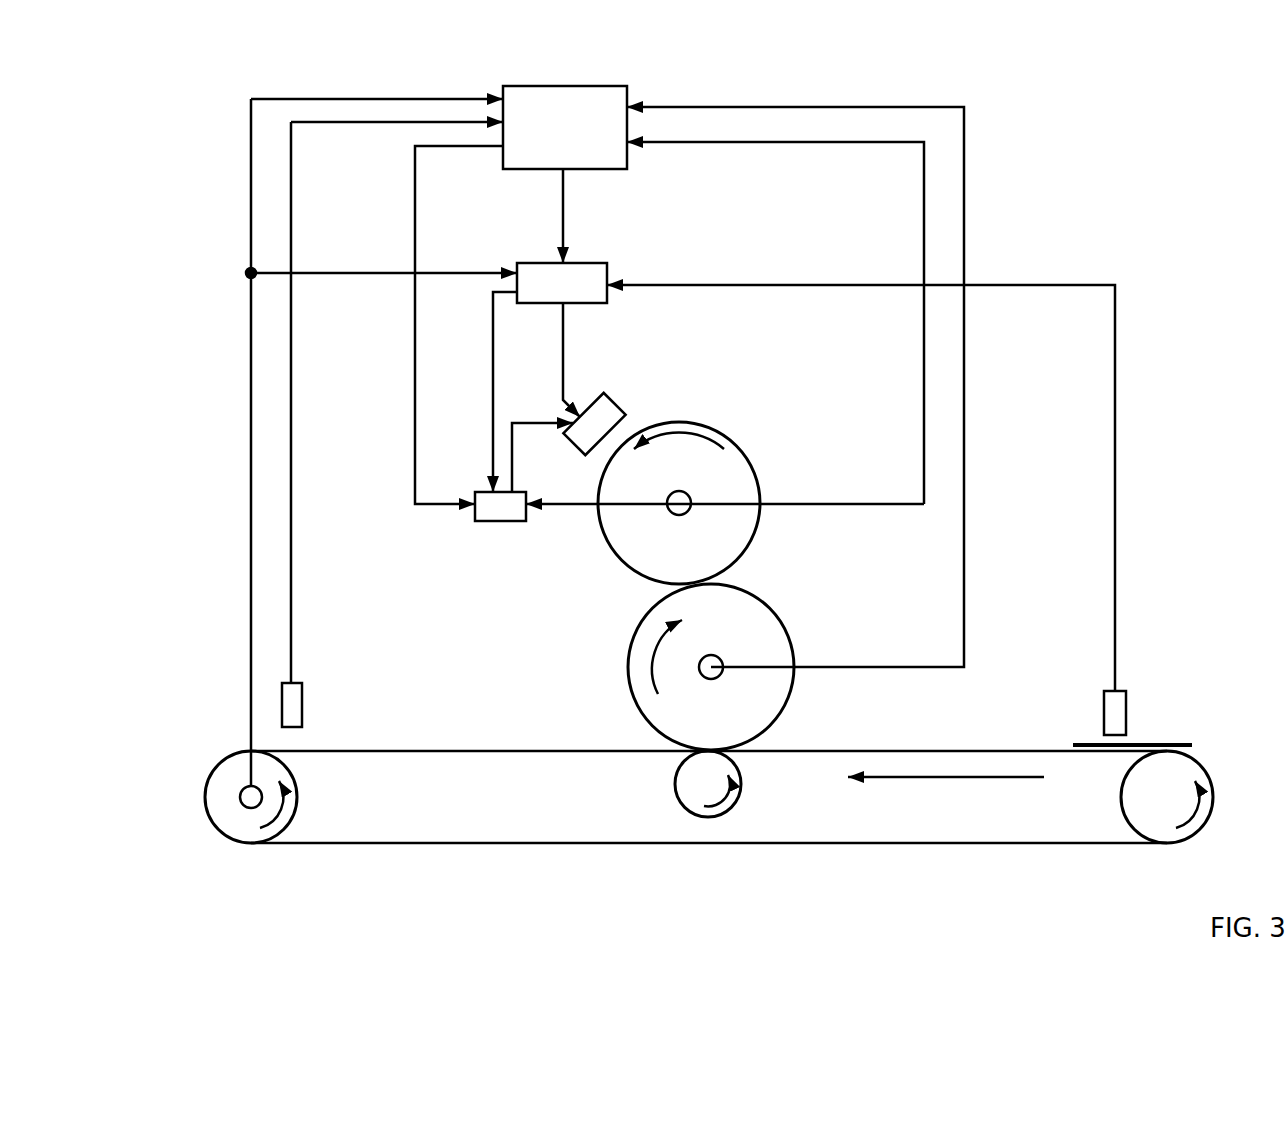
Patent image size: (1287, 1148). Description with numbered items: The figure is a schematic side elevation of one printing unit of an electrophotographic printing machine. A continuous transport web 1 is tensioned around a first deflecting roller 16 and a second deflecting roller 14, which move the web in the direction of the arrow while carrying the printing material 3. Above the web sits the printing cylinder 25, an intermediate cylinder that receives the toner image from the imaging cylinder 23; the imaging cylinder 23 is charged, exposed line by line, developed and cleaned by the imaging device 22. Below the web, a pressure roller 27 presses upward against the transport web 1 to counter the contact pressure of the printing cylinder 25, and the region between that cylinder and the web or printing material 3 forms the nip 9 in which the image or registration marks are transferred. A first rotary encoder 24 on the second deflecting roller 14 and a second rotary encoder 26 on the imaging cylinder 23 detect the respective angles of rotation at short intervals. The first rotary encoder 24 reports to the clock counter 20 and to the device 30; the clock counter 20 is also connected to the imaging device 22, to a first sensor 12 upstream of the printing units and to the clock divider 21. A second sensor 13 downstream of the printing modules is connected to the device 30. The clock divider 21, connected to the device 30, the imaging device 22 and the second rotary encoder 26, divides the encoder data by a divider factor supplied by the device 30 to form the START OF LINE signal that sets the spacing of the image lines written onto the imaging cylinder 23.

The transport web 1 is at (945, 751).
The printing material 3 is at (1180, 745).
The nip 9 is at (703, 753).
The first sensor 12 is at (1126, 710).
The second sensor 13 is at (302, 708).
The second deflecting roller 14 is at (222, 772).
The first deflecting roller 16 is at (1210, 770).
The clock counter 20 is at (608, 263).
The clock divider 21 is at (490, 508).
The imaging device 22 is at (606, 391).
The imaging cylinder 23 is at (738, 442).
The first rotary encoder 24 is at (247, 808).
The printing cylinder 25 is at (755, 600).
The second rotary encoder 26 is at (667, 517).
The pressure roller 27 is at (735, 797).
The device 30 is at (608, 86).